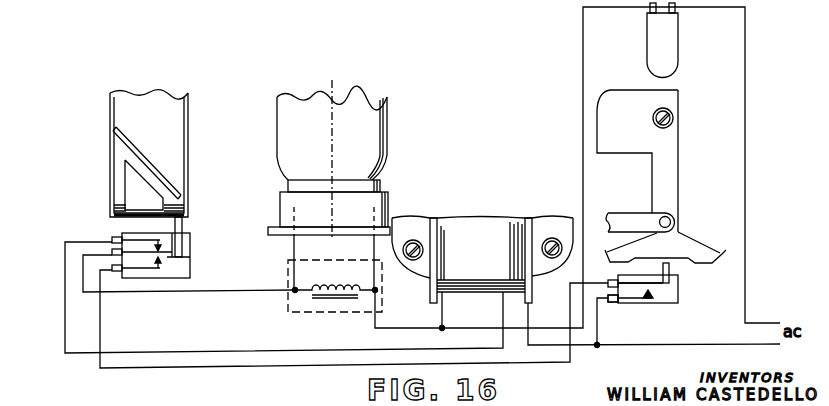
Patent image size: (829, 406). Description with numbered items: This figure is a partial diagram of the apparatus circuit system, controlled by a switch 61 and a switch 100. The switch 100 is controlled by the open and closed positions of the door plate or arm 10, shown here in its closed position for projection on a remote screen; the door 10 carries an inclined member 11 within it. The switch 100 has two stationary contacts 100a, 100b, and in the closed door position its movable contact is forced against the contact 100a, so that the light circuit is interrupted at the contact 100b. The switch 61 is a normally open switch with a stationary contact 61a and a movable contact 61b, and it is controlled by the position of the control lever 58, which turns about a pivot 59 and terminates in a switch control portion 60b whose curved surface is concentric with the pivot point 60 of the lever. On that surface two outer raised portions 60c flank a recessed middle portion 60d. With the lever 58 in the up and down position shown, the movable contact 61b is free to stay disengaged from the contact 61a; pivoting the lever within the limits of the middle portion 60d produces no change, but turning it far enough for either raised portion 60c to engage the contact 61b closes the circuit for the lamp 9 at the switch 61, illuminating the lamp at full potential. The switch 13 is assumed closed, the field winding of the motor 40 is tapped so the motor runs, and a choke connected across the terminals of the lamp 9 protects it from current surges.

The lamp 9 is at (370, 135).
The door plate or arm 10 is at (173, 133).
The inclined plate 11 is at (168, 180).
The switch 13 is at (668, 47).
The motor 40 is at (418, 223).
The control lever 58 is at (672, 162).
The pivot 59 is at (670, 218).
The pivot point 60 is at (672, 110).
The switch control portion 60b is at (677, 250).
The raised outer portions 60c is at (612, 248).
The middle portion 60d is at (690, 262).
The switch 61 is at (673, 293).
The stationary contact 61a is at (637, 300).
The movable contact 61b is at (660, 285).
The switch 100 is at (192, 265).
The stationary contact 100a is at (137, 270).
The stationary contact 100b is at (140, 238).